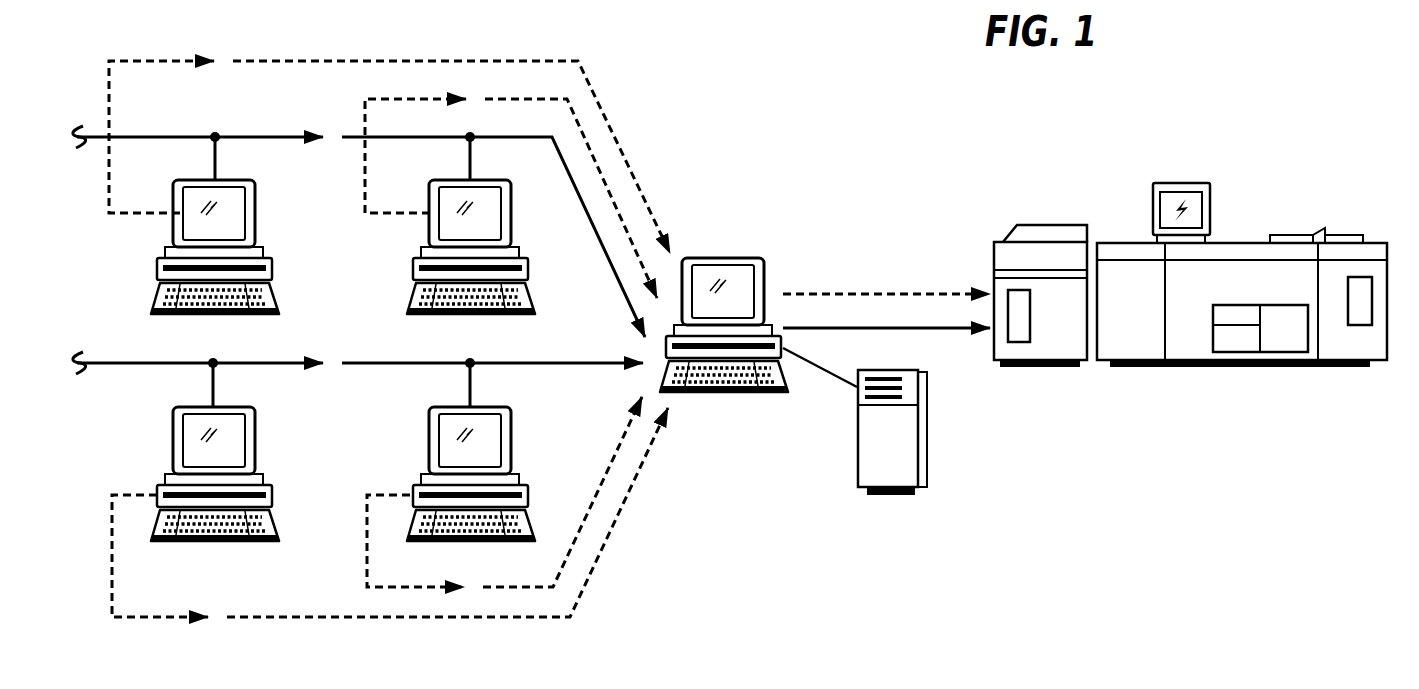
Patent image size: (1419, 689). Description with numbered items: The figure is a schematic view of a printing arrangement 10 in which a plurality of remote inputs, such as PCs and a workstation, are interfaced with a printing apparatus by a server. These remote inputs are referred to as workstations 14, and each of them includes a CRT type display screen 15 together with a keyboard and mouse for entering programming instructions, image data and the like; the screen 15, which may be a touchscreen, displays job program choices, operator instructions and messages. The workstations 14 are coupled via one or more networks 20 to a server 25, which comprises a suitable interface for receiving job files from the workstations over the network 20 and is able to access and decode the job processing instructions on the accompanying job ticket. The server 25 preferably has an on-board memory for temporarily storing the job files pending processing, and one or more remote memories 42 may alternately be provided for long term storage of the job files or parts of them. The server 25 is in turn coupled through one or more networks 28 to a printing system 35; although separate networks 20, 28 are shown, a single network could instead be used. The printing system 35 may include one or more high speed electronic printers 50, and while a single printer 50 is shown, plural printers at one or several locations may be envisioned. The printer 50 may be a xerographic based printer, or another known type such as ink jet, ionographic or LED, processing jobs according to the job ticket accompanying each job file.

The printing arrangement 10 is at (715, 126).
The workstations 14 is at (278, 249).
The display screen 15 is at (483, 221).
The networks 20 is at (628, 304).
The server 25 is at (727, 257).
The networks 28 is at (889, 330).
The printing system 35 is at (1277, 202).
The remote memories 42 is at (857, 447).
The printer 50 is at (1192, 350).